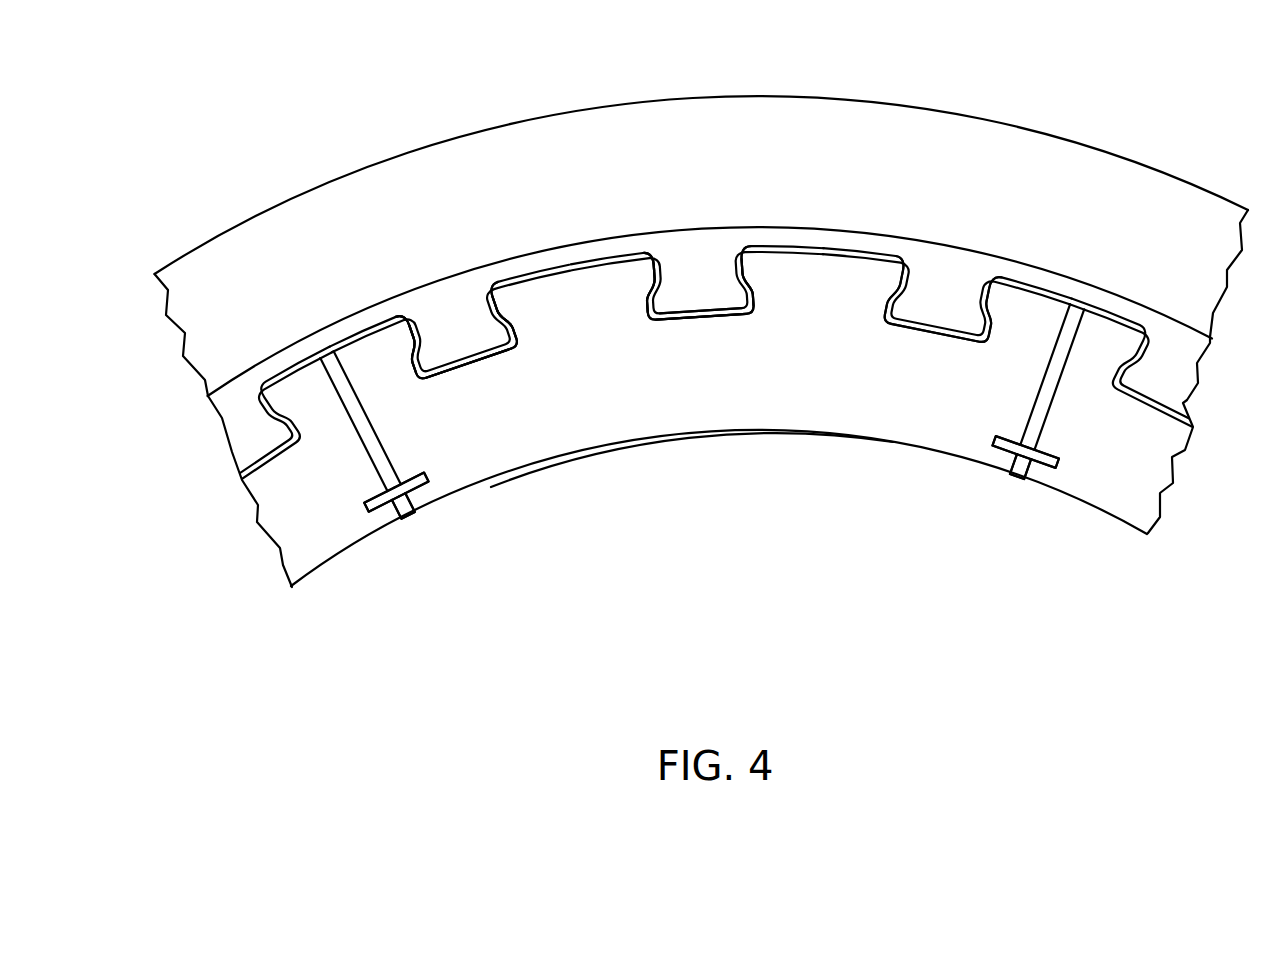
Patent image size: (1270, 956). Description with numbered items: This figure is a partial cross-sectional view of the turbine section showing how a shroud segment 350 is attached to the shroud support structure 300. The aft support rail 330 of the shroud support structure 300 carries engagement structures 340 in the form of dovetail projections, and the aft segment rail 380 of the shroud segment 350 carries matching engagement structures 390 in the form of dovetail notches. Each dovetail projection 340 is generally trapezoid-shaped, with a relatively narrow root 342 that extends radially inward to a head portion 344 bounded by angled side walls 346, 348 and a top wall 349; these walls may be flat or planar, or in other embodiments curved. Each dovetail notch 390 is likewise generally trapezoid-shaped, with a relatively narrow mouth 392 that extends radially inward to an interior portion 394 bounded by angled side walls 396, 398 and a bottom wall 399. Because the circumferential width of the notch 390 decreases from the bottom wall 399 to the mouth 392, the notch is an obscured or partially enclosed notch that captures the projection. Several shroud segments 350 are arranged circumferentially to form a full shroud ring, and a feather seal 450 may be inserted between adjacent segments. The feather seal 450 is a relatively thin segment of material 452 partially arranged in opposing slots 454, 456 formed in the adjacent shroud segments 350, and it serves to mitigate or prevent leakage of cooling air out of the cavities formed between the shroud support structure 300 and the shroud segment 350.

The shroud support structure 300 is at (702, 337).
The aft support rail 330 is at (290, 349).
The engagement structures 340 is at (699, 271).
The root 342 is at (427, 323).
The head portion 344 is at (505, 347).
The angled side wall 346 is at (397, 347).
The angled side wall 348 is at (508, 306).
The top wall 349 is at (468, 364).
The shroud segment 350 is at (719, 508).
The aft segment rail 380 is at (523, 416).
The engagement structures 390 is at (933, 335).
The mouth 392 is at (643, 268).
The interior portion 394 is at (704, 319).
The angled side wall 396 is at (643, 292).
The angled side wall 398 is at (752, 276).
The bottom wall 399 is at (702, 316).
The feather seal 450 is at (703, 458).
The segment of material 452 is at (398, 519).
The slot 454 is at (376, 499).
The slot 456 is at (417, 474).